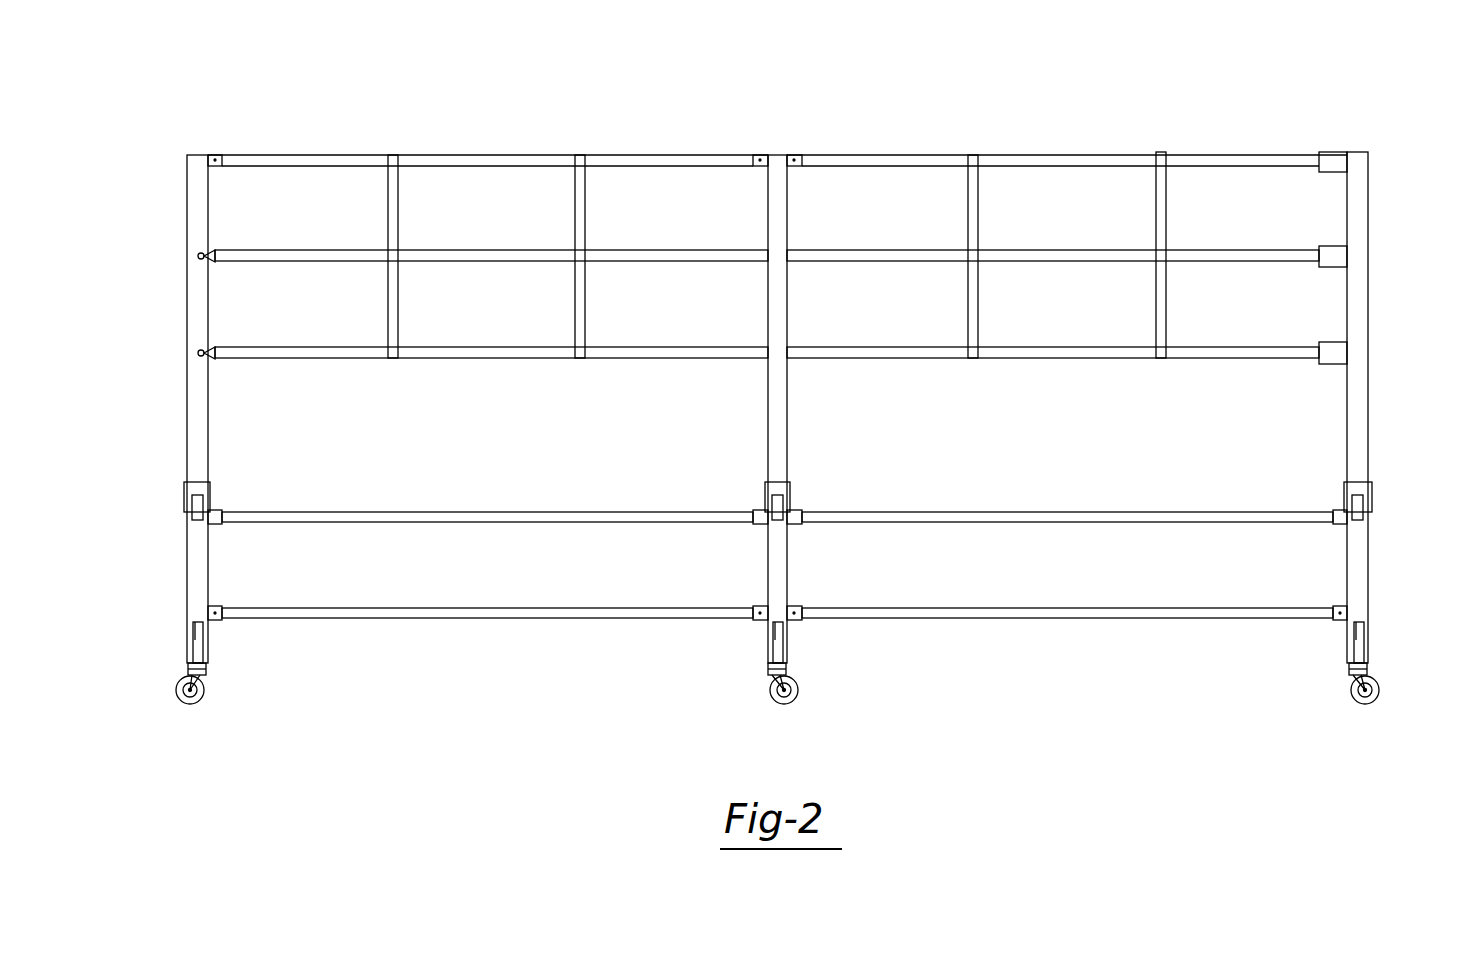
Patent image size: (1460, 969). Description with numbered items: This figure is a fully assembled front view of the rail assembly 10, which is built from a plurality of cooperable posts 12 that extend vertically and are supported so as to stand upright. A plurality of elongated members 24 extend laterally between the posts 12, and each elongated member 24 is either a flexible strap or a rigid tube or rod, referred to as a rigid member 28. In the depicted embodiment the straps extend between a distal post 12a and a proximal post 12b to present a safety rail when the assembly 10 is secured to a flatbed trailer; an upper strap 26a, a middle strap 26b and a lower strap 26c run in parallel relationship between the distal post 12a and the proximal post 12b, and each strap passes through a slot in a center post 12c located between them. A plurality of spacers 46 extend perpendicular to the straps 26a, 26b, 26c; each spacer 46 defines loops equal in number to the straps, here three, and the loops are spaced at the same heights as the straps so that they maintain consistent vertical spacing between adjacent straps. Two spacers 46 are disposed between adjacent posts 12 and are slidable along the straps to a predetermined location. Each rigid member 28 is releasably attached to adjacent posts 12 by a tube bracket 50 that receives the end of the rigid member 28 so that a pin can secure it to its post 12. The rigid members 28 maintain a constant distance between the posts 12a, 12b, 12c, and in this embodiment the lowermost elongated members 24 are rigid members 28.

The rail assembly 10 is at (1262, 90).
The cooperable posts 12 is at (1368, 310).
The distal post 12a is at (187, 295).
The proximal post 12b is at (187, 378).
The center post 12c is at (777, 155).
The elongated members 24 is at (470, 126).
The upper strap 26a is at (301, 155).
The middle strap 26b is at (487, 250).
The lower strap 26c is at (680, 347).
The rigid members 28 is at (489, 512).
The spacers 46 is at (393, 155).
The tube bracket 50 is at (218, 622).